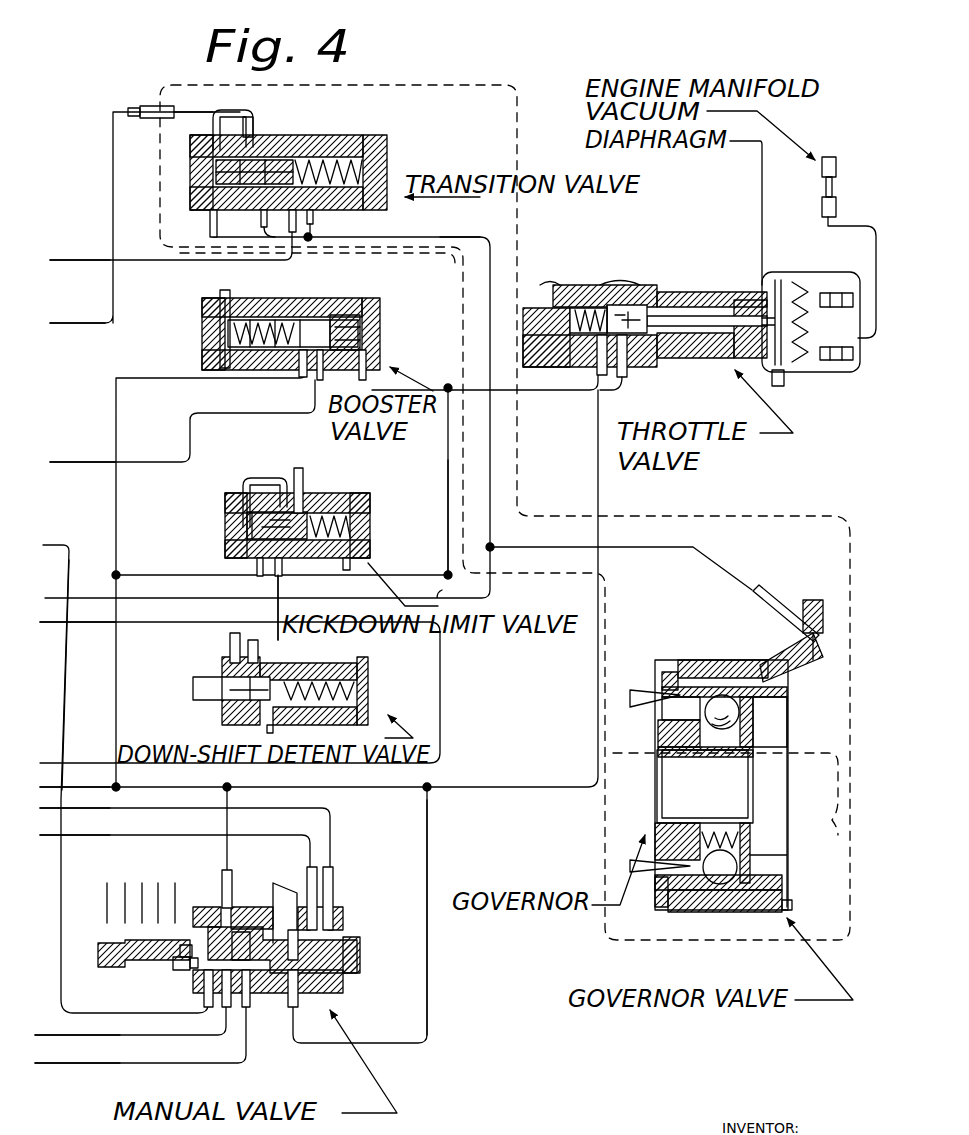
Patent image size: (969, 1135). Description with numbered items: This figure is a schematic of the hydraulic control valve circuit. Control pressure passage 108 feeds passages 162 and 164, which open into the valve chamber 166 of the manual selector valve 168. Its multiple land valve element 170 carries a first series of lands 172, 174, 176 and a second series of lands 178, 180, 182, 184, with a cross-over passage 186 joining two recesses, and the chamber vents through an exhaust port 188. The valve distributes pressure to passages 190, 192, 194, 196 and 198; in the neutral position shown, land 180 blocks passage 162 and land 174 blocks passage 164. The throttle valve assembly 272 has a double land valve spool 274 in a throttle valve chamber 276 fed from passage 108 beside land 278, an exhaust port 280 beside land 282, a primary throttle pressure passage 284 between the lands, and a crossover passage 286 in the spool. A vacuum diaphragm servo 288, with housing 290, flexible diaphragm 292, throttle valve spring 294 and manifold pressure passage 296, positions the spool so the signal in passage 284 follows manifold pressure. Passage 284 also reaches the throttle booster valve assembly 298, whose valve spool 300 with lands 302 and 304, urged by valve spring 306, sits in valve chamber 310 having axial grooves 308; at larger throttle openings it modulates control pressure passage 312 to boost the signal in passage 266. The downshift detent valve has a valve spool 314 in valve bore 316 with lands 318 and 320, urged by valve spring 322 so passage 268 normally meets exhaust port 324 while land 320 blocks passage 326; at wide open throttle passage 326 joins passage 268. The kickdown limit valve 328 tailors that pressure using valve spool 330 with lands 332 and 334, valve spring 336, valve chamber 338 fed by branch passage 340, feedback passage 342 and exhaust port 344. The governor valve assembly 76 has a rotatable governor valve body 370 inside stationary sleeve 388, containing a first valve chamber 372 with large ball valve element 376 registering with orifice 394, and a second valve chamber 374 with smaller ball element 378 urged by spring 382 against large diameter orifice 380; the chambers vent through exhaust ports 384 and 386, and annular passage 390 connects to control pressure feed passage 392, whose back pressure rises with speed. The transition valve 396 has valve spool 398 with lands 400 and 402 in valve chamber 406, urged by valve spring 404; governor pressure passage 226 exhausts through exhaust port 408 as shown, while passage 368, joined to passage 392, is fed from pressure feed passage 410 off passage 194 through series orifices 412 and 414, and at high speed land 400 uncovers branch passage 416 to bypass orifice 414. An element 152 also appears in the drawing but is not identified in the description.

The governor valve assembly 76 is at (725, 655).
The control pressure passage 108 is at (70, 792).
The passage 152 is at (446, 458).
The control pressure passage 162 is at (220, 860).
The control pressure passage 164 is at (428, 812).
The valve chamber 166 is at (262, 992).
The manual selector valve 168 is at (240, 930).
The multiple land valve element 170 is at (195, 968).
The valve land 172 is at (180, 960).
The valve land 174 is at (287, 1010).
The valve land 176 is at (345, 978).
The valve land 178 is at (135, 935).
The valve land 180 is at (275, 885).
The valve land 182 is at (343, 918).
The valve land 184 is at (355, 940).
The cross-over passage 186 is at (170, 968).
The exhaust port 188 is at (300, 895).
The communicating passage 190 is at (52, 544).
The communicating passage 192 is at (45, 1034).
The forward clutch feed passage 194 is at (42, 1062).
The communicating passage 196 is at (72, 838).
The communicating passage 198 is at (72, 812).
The governor pressure passage 226 is at (55, 258).
The passage 266 is at (88, 448).
The passage 268 is at (75, 625).
The throttle valve assembly 272 is at (670, 300).
The double land valve spool 274 is at (595, 300).
The throttle valve chamber 276 is at (548, 290).
The valve land 278 is at (575, 300).
The exhaust port 280 is at (640, 372).
The valve land 282 is at (640, 300).
The primary throttle pressure passage 284 is at (576, 392).
The crossover passage 286 is at (620, 300).
The vacuum diaphragm servo 288 is at (780, 275).
The housing 290 is at (785, 388).
The flexible diaphragm 292 is at (790, 355).
The throttle valve spring 294 is at (838, 362).
The manifold pressure passage 296 is at (876, 232).
The throttle booster valve assembly 298 is at (298, 320).
The valve spool 300 is at (365, 327).
The valve land 302 is at (298, 370).
The valve land 304 is at (365, 340).
The valve spring 306 is at (215, 322).
The axial grooves 308 is at (372, 305).
The valve chamber 310 is at (332, 315).
The control pressure passage 312 is at (180, 377).
The valve spool 314 is at (220, 688).
The valve bore 316 is at (275, 735).
The valve land 318 is at (230, 680).
The valve land 320 is at (250, 645).
The valve spring 322 is at (365, 688).
The exhaust port 324 is at (230, 658).
The passage 326 is at (280, 586).
The kickdown limit valve 328 is at (300, 515).
The valve spool 330 is at (280, 520).
The valve land 332 is at (250, 520).
The valve land 334 is at (284, 566).
The valve spring 336 is at (360, 520).
The valve chamber 338 is at (258, 530).
The branch passage 340 is at (160, 575).
The feedback passage 342 is at (240, 485).
The exhaust port 344 is at (298, 475).
The passage 368 is at (470, 236).
The governor valve body 370 is at (660, 745).
The first cylindrical valve chamber 372 is at (742, 712).
The second cylindrical valve chamber 374 is at (745, 840).
The large diameter ball valve element 376 is at (657, 728).
The smaller ball element 378 is at (745, 860).
The large diameter orifice 380 is at (716, 885).
The spring 382 is at (710, 850).
The exhaust port 384 is at (660, 862).
The exhaust port 386 is at (628, 697).
The stationary sleeve 388 is at (750, 660).
The annular passage 390 is at (750, 912).
The control pressure feed passage 392 is at (745, 582).
The orifice 394 is at (705, 660).
The transition valve 396 is at (300, 140).
The valve spool 398 is at (275, 150).
The valve land 400 is at (235, 112).
The valve land 402 is at (325, 150).
The valve spring 404 is at (420, 132).
The valve chamber 406 is at (300, 225).
The exhaust port 408 is at (213, 235).
The pressure feed passage 410 is at (82, 308).
The flow restricting orifice 412 is at (150, 105).
The flow restricting orifice 414 is at (113, 120).
The branch passage 416 is at (280, 100).